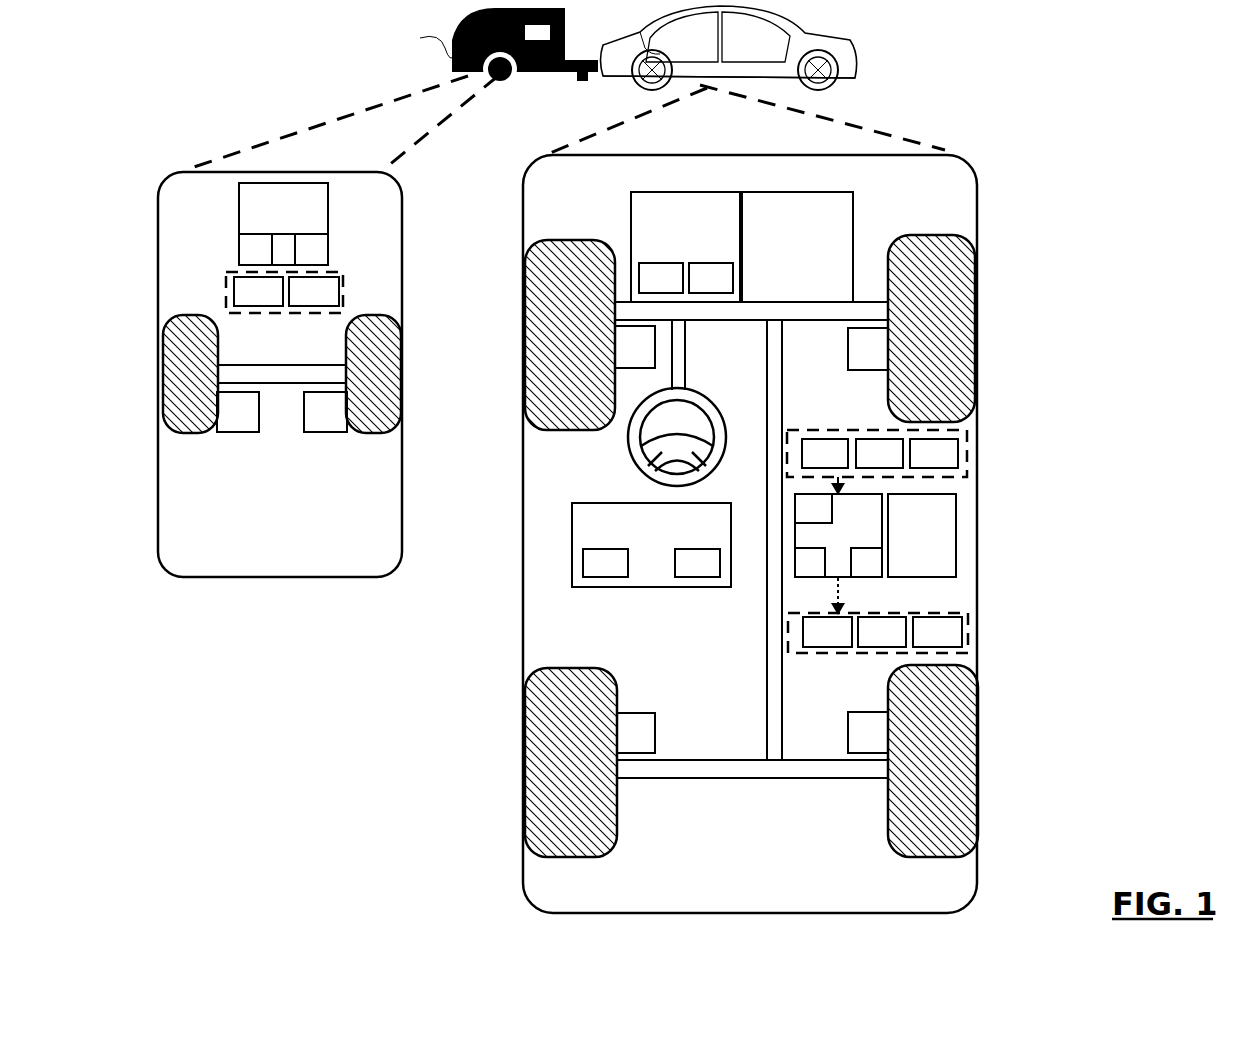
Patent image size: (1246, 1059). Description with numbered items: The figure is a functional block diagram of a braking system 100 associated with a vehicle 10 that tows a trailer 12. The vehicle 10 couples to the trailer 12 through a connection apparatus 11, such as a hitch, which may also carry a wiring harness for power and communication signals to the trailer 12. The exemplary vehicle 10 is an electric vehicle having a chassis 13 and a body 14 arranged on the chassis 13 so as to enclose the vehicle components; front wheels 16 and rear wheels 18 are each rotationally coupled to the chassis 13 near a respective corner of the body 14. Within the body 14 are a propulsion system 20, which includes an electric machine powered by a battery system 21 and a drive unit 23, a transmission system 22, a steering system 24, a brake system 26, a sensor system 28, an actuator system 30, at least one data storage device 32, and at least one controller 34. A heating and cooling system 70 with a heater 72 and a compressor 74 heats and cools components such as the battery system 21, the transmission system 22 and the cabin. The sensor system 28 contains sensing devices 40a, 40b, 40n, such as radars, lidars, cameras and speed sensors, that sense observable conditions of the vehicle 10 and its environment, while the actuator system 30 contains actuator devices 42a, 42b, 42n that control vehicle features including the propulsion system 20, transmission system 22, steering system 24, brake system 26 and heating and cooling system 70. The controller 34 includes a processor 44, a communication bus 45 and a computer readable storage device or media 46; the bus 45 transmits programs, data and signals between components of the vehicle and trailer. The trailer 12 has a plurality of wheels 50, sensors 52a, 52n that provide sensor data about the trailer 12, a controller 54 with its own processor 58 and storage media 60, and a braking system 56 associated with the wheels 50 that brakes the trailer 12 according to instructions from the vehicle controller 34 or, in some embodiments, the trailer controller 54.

The braking system 100 is at (1138, 112).
The vehicle 10 is at (858, 42).
The connection apparatus 11 is at (597, 52).
The trailer 12 is at (473, 47).
The chassis 13 is at (767, 695).
The body 14 is at (523, 515).
The front wheels 16 is at (575, 430).
The rear wheels 18 is at (585, 857).
The propulsion system 20 is at (675, 256).
The battery system 21 is at (649, 287).
The transmission system 22 is at (785, 256).
The drive unit 23 is at (699, 287).
The steering system 24 is at (712, 348).
The brake system 26 is at (623, 356).
The sensor system 28 is at (815, 432).
The actuator system 30 is at (835, 653).
The data storage device 32 is at (910, 545).
The controller 34 is at (826, 544).
The sensing device 40a is at (808, 463).
The sensing device 40b is at (862, 463).
The sensing device 40n is at (917, 463).
The actuator device 42a is at (810, 641).
The actuator device 42b is at (865, 641).
The actuator device 42n is at (920, 641).
The processor 44 is at (798, 572).
The communication bus 45 is at (801, 518).
The computer readable storage device or media 46 is at (854, 572).
The wheels 50 is at (207, 433).
The sensor 52a is at (241, 301).
The sensor 52n is at (297, 301).
The controller 54 is at (271, 231).
The braking system 56 is at (226, 421).
The processor 58 is at (243, 259).
The computer readable storage device or media 60 is at (299, 259).
The heating and cooling system 70 is at (639, 553).
The heater 72 is at (593, 572).
The compressor 74 is at (685, 572).